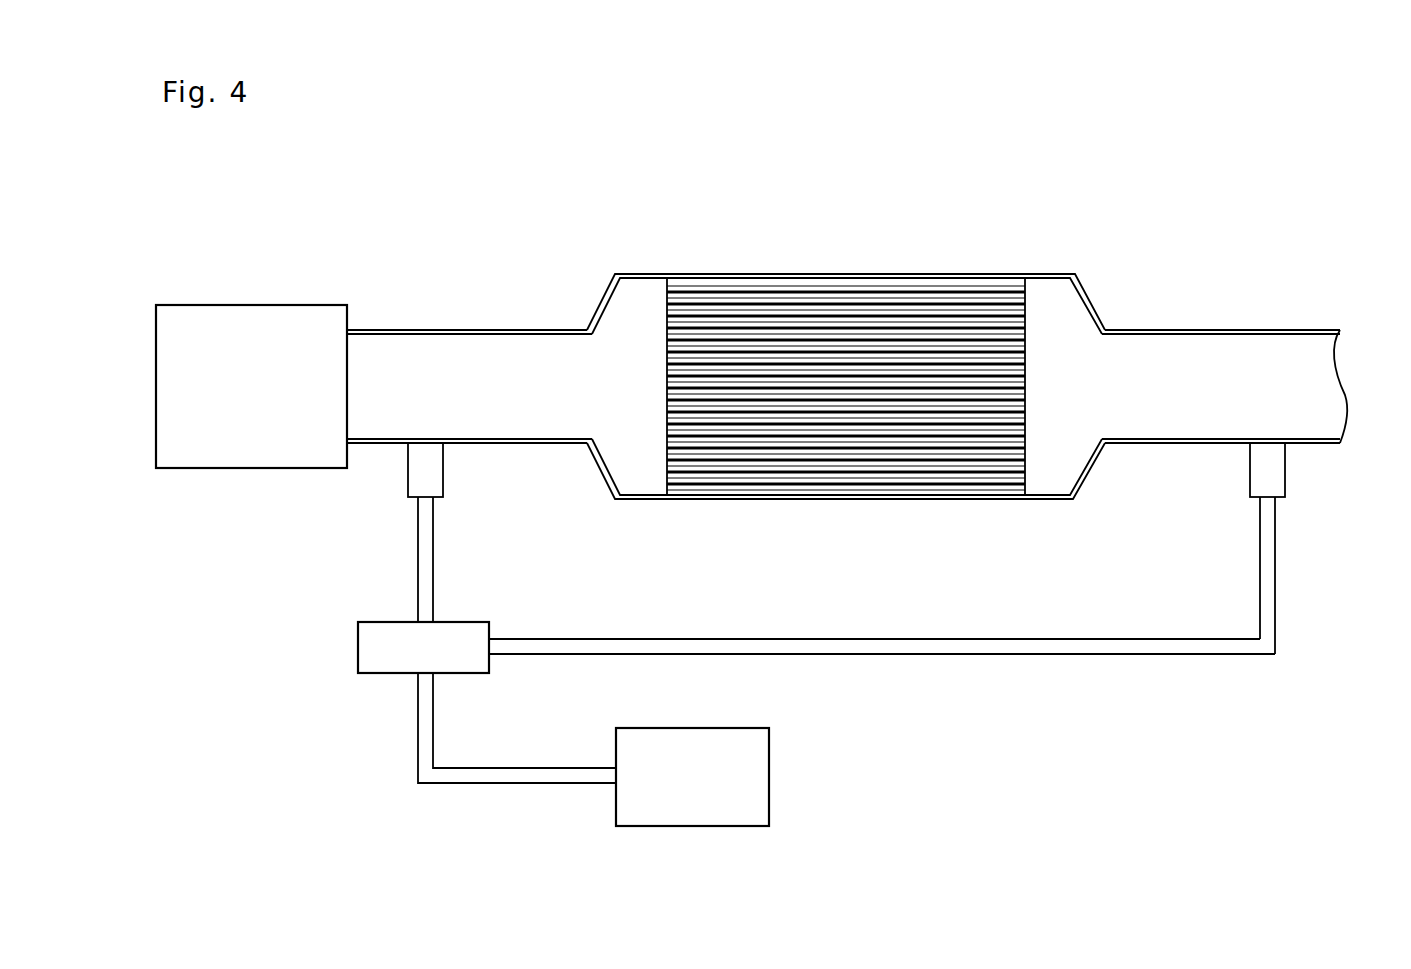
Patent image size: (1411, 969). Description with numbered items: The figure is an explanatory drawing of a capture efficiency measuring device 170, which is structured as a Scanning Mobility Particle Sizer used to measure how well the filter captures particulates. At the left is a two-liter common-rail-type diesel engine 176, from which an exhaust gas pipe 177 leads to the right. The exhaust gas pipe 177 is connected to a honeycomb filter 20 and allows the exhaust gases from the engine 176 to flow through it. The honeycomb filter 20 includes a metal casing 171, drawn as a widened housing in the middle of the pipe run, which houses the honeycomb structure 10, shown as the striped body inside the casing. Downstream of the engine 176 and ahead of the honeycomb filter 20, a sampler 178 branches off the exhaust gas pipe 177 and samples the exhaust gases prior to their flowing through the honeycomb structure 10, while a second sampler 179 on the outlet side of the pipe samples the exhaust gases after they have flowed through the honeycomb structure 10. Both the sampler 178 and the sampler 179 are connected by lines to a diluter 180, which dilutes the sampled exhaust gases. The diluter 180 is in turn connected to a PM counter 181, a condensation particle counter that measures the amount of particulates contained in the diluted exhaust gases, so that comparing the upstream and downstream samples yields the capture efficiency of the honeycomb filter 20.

The honeycomb structure 10 is at (1048, 296).
The honeycomb filter 20 is at (923, 301).
The capture efficiency measuring device 170 is at (883, 306).
The metal casing 171 is at (1035, 500).
The common-rail-type diesel engine 176 is at (250, 325).
The exhaust gas pipe 177 is at (397, 352).
The sampler 178 is at (408, 473).
The sampler 179 is at (1286, 472).
The diluter 180 is at (358, 648).
The PM counter 181 is at (769, 773).